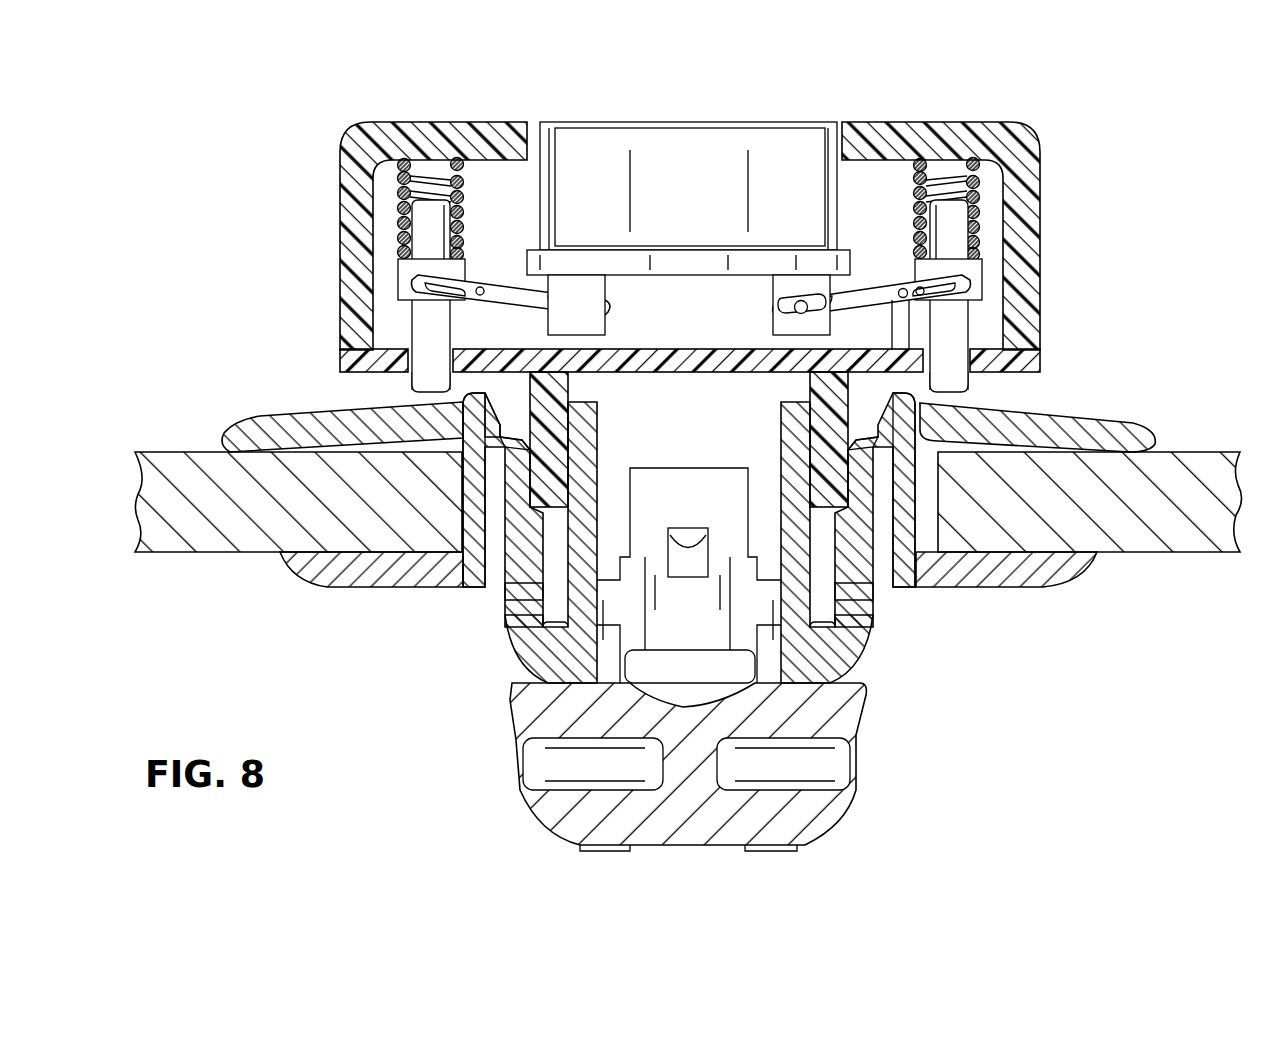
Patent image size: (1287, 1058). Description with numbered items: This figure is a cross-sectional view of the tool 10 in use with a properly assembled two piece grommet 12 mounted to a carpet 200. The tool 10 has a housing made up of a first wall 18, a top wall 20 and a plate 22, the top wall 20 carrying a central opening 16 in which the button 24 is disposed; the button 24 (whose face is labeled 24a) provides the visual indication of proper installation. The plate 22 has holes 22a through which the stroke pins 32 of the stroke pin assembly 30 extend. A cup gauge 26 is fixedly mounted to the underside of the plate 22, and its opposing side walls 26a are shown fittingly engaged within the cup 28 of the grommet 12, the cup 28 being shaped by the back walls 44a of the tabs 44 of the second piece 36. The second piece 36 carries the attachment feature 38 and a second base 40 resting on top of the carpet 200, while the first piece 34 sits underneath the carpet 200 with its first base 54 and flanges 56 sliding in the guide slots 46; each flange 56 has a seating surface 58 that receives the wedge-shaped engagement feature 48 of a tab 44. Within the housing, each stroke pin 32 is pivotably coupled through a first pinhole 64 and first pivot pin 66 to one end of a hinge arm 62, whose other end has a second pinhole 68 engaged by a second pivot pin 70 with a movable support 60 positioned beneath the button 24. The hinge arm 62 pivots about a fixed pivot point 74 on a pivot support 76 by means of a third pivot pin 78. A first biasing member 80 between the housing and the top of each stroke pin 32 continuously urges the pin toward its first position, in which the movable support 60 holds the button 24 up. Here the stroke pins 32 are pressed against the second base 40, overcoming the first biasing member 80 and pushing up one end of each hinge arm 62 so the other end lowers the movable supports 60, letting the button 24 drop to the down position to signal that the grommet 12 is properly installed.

The tool 10 is at (1003, 96).
The two piece grommet 12 is at (896, 632).
The central opening 16 is at (838, 120).
The first wall 18 is at (1042, 220).
The top wall 20 is at (470, 121).
The plate 22 is at (343, 352).
The holes 22a is at (418, 376).
The button 24 is at (690, 121).
The actuator block face 24a is at (690, 187).
The cup gauge 26 is at (516, 411).
The side walls 26a is at (553, 393).
The cup 28 is at (553, 548).
The stroke pin assembly 30 is at (976, 312).
The stroke pin 32 is at (962, 378).
The first piece 34 is at (1097, 390).
The second piece 36 is at (1060, 592).
The attachment feature 38 is at (848, 822).
The second base 40 is at (1122, 405).
The tabs 44 is at (490, 592).
The back wall 44a is at (515, 465).
The guide slot 46 is at (498, 457).
The engagement feature 48 is at (497, 502).
The first base 54 is at (308, 585).
The flanges 56 is at (472, 377).
The seating surface 58 is at (468, 433).
The movable support 60 is at (785, 286).
The hinge arm 62 is at (880, 272).
The first pinhole 64 is at (924, 222).
The first pivot pin 66 is at (980, 264).
The second pinhole 68 is at (797, 300).
The second pivot pin 70 is at (800, 318).
The fixed pivot point 74 is at (906, 300).
The pivot support 76 is at (892, 328).
The third pivot pin 78 is at (901, 287).
The first biasing member 80 is at (935, 176).
The carpet 200 is at (1212, 457).